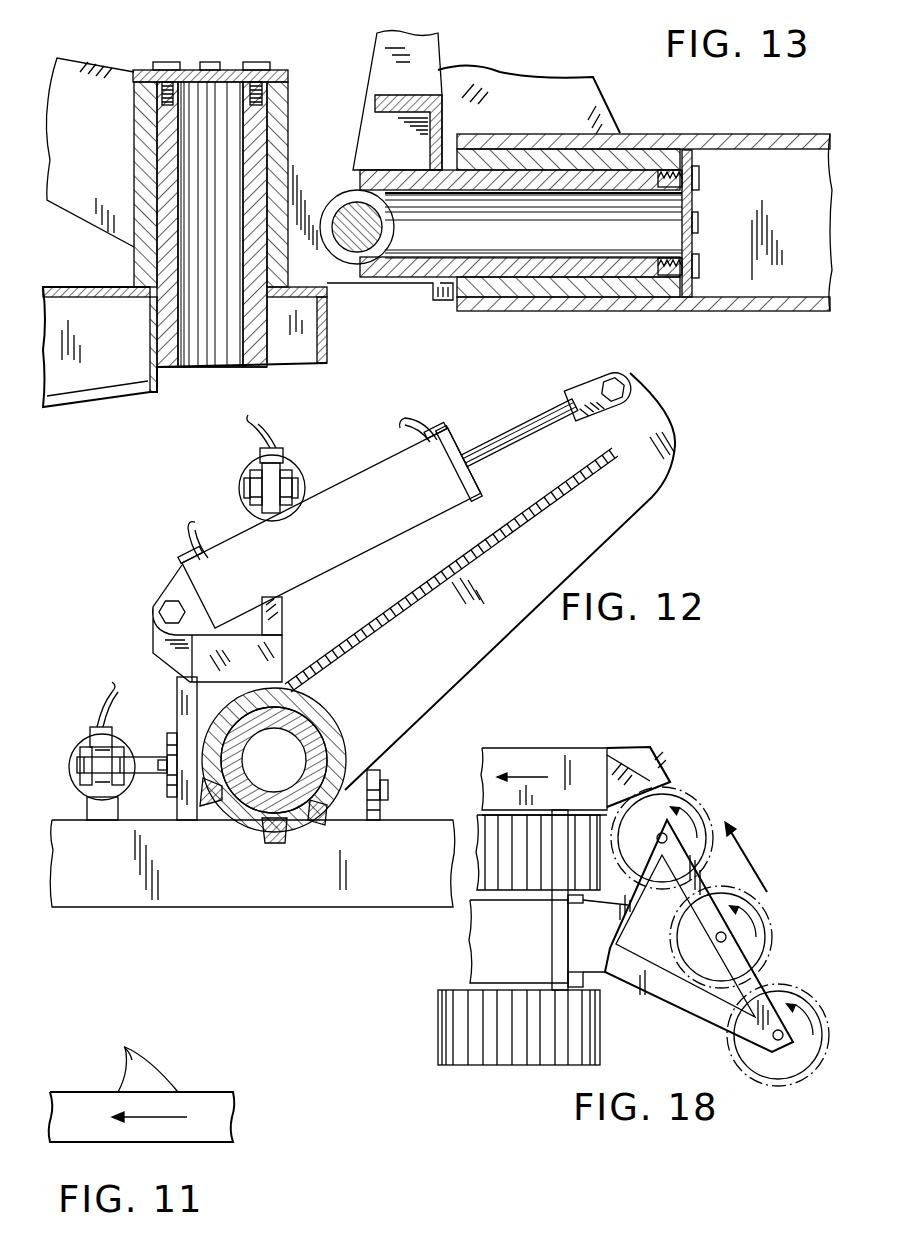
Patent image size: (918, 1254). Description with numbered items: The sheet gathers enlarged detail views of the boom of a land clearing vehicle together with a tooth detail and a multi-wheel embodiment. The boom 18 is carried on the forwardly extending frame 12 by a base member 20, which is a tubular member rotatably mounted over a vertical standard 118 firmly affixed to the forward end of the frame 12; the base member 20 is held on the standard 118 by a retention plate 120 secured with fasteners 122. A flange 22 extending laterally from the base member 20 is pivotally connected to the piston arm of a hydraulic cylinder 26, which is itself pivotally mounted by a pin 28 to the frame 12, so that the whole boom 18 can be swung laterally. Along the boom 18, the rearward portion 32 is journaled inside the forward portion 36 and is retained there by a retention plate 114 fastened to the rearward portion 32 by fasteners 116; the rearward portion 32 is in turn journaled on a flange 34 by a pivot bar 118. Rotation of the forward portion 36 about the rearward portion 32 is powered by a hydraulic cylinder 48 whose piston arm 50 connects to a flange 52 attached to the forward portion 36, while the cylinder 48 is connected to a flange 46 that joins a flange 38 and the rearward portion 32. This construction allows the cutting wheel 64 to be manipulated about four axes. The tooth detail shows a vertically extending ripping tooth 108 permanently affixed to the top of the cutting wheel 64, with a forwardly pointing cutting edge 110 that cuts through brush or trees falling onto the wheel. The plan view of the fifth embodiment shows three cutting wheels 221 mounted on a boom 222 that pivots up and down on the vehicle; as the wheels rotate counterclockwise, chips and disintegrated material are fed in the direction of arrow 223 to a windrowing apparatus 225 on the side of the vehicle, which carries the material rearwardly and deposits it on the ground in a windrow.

In FIG. 13, the frame 12 is at (97, 397).
In FIG. 12, the frame 12 is at (103, 897).
In FIG. 13, the boom 18 is at (736, 118).
In FIG. 13, the base member 20 is at (280, 113).
In FIG. 12, the flange 22 is at (140, 757).
In FIG. 12, the hydraulic cylinder 26 is at (77, 742).
In FIG. 12, the pin 28 is at (90, 808).
In FIG. 13, the rearward portion of the boom 32 is at (522, 180).
In FIG. 12, the rearward portion of the boom 32 is at (252, 808).
In FIG. 13, the flange 34 is at (297, 143).
In FIG. 13, the forward portion of the boom 36 is at (632, 158).
In FIG. 12, the forward portion of the boom 36 is at (322, 720).
In FIG. 13, the flange 38 is at (428, 53).
In FIG. 12, the flange 38 is at (277, 618).
In FIG. 12, the flange 46 is at (163, 643).
In FIG. 12, the hydraulic cylinder 48 is at (353, 490).
In FIG. 12, the piston arm 50 is at (510, 433).
In FIG. 13, the flange 52 is at (503, 75).
In FIG. 12, the flange 52 is at (620, 500).
In FIG. 11, the cutting wheel 64 is at (250, 1121).
In FIG. 11, the ripping tooth 108 is at (153, 1077).
In FIG. 11, the cutting edge 110 is at (124, 1047).
In FIG. 13, the retention plate 114 is at (695, 200).
In FIG. 13, the fasteners 116 is at (700, 177).
In FIG. 13, the pivot bar 118 is at (165, 153).
In FIG. 13, the retention plate 120 is at (225, 82).
In FIG. 13, the fasteners 122 is at (270, 68).
In FIG. 18, the roller 221 is at (697, 815).
In FIG. 18, the boom 222 is at (637, 982).
In FIG. 18, the arrow 223 is at (747, 855).
In FIG. 18, the windrowing apparatus 225 is at (542, 762).